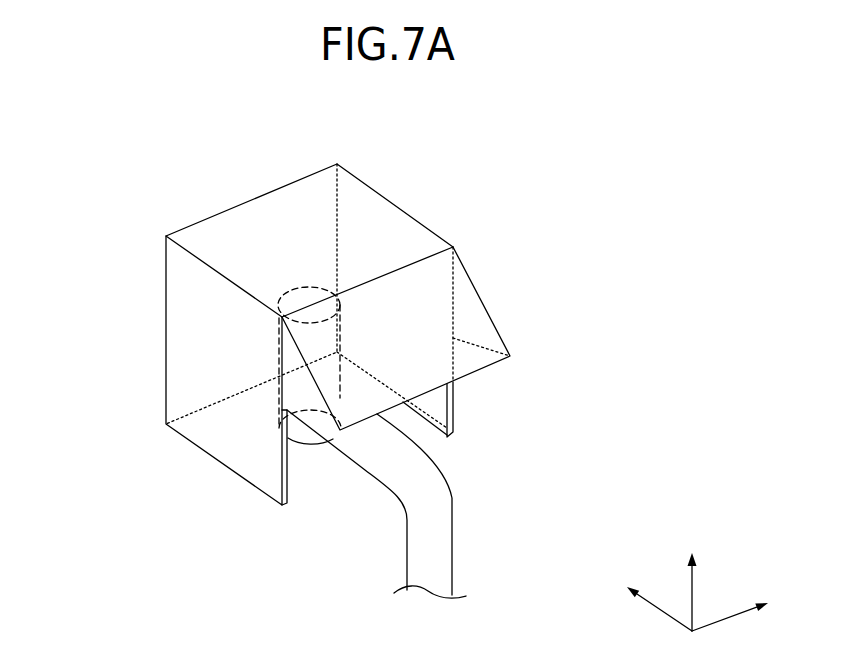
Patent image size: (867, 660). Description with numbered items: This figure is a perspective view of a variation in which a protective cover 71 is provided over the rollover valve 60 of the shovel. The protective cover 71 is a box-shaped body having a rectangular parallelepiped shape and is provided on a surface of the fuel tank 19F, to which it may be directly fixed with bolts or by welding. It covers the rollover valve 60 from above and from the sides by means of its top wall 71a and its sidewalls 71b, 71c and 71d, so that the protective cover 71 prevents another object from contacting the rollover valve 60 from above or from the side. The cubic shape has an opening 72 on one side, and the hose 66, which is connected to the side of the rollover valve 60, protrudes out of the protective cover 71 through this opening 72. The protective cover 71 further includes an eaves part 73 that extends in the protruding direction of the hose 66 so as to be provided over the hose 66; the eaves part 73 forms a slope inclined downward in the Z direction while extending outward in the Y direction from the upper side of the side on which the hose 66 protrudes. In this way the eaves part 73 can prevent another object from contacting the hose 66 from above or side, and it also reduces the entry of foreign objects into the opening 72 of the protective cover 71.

The fuel tank 19F is at (140, 486).
The protective cover 71 is at (237, 193).
The top wall 71a is at (387, 217).
The sidewall 71b is at (168, 362).
The sidewall 71c is at (455, 408).
The sidewall 71d is at (177, 275).
The eaves part 73 is at (485, 302).
The rollover valve 60 is at (298, 287).
The opening 72 is at (305, 468).
The hose 66 is at (453, 555).